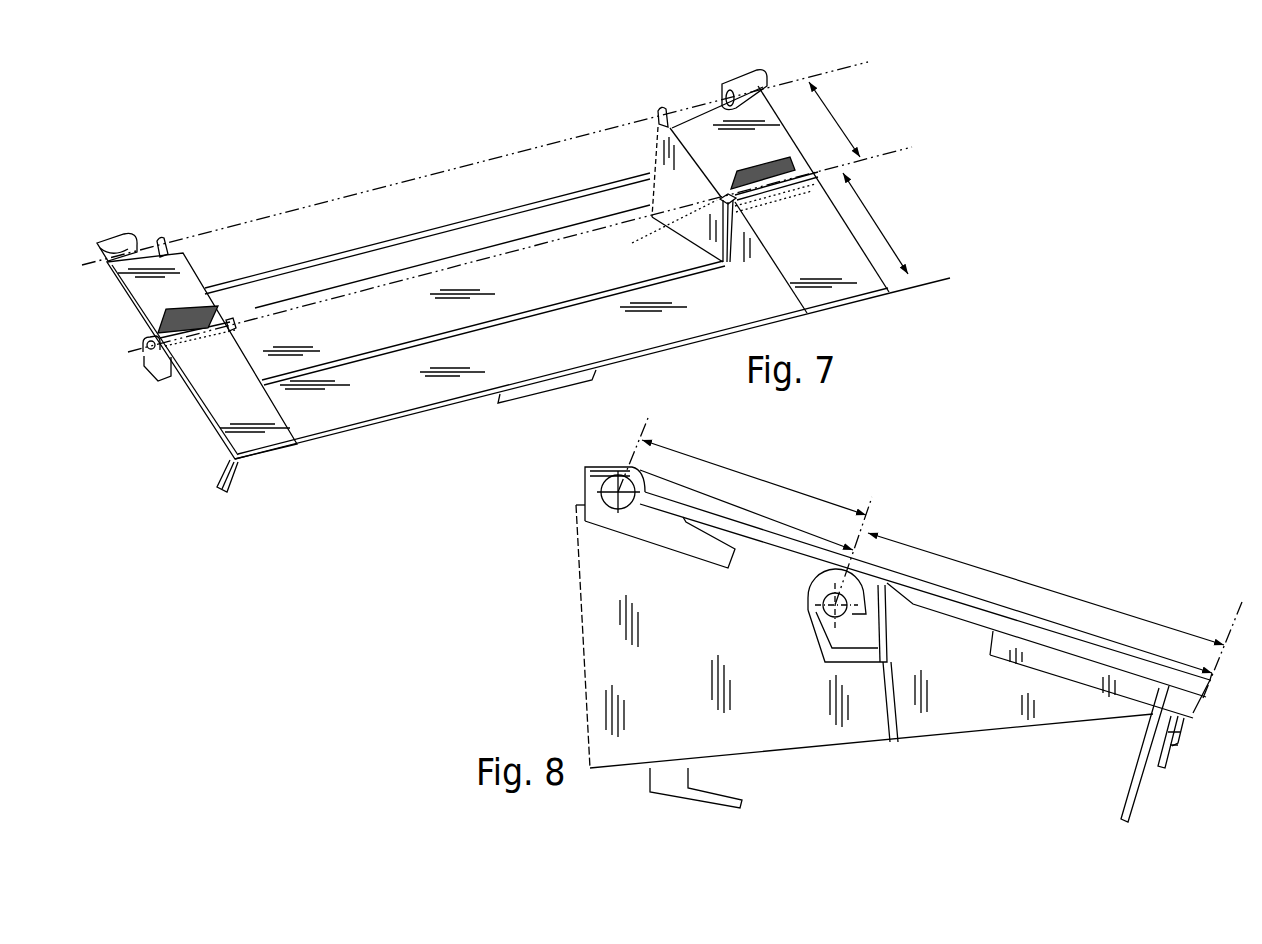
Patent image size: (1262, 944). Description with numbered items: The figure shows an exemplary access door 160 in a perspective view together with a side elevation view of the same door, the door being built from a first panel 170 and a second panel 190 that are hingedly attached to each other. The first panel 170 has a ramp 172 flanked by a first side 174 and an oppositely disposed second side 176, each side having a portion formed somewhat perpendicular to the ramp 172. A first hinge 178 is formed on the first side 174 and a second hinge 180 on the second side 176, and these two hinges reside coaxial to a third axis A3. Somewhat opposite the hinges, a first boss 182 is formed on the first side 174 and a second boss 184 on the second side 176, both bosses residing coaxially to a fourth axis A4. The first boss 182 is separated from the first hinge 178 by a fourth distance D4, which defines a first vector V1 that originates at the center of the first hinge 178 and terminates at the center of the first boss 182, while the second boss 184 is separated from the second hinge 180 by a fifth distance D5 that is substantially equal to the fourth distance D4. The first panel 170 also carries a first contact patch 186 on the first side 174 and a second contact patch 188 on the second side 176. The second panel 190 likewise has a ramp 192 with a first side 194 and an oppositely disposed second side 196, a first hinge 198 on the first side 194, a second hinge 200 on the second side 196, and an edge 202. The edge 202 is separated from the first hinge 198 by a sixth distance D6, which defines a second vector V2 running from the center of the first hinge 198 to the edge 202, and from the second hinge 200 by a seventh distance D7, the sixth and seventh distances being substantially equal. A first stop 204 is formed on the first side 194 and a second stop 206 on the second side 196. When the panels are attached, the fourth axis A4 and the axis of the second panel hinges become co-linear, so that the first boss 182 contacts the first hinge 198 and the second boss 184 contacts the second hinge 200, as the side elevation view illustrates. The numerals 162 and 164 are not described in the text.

In FIG. 7, the access door 160 is at (450, 140).
In FIG. 8, the access door 160 is at (990, 515).
In FIG. 7, the base 162 is at (350, 450).
In FIG. 8, the base 162 is at (875, 745).
In FIG. 7, the panel surface 164 is at (518, 280).
In FIG. 7, the first panel 170 is at (268, 269).
In FIG. 7, the ramp 172 is at (369, 313).
In FIG. 8, the ramp 172 is at (740, 755).
In FIG. 7, the first side 174 is at (192, 277).
In FIG. 8, the first side 174 is at (680, 686).
In FIG. 7, the second side 176 is at (732, 143).
In FIG. 7, the first hinge 178 is at (123, 249).
In FIG. 8, the first hinge 178 is at (620, 468).
In FIG. 7, the second hinge 180 is at (720, 92).
In FIG. 7, the first boss 182 is at (233, 333).
In FIG. 8, the first boss 182 is at (828, 582).
In FIG. 7, the second boss 184 is at (657, 229).
In FIG. 7, the first contact patch 186 is at (156, 310).
In FIG. 7, the second contact patch 188 is at (752, 160).
In FIG. 7, the second panel 190 is at (860, 309).
In FIG. 7, the ramp 192 is at (402, 404).
In FIG. 8, the ramp 192 is at (1125, 727).
In FIG. 7, the first side 194 is at (220, 401).
In FIG. 8, the first side 194 is at (1003, 703).
In FIG. 7, the second side 196 is at (810, 273).
In FIG. 7, the first hinge 198 is at (146, 358).
In FIG. 8, the first hinge 198 is at (818, 583).
In FIG. 7, the second hinge 200 is at (743, 213).
In FIG. 7, the edge 202 is at (437, 410).
In FIG. 8, the edge 202 is at (1212, 685).
In FIG. 7, the first stop 204 is at (173, 346).
In FIG. 8, the first stop 204 is at (884, 586).
In FIG. 7, the second stop 206 is at (752, 216).
In FIG. 7, the third axis A3 is at (196, 233).
In FIG. 8, the third axis A3 is at (612, 505).
In FIG. 7, the fourth axis A4 is at (912, 147).
In FIG. 8, the fourth axis A4 is at (823, 603).
In FIG. 8, the fourth distance D4 is at (720, 463).
In FIG. 7, the fifth distance D5 is at (832, 110).
In FIG. 8, the sixth distance D6 is at (1053, 592).
In FIG. 7, the seventh distance D7 is at (882, 224).
In FIG. 8, the first vector V1 is at (697, 498).
In FIG. 8, the second vector V2 is at (927, 582).